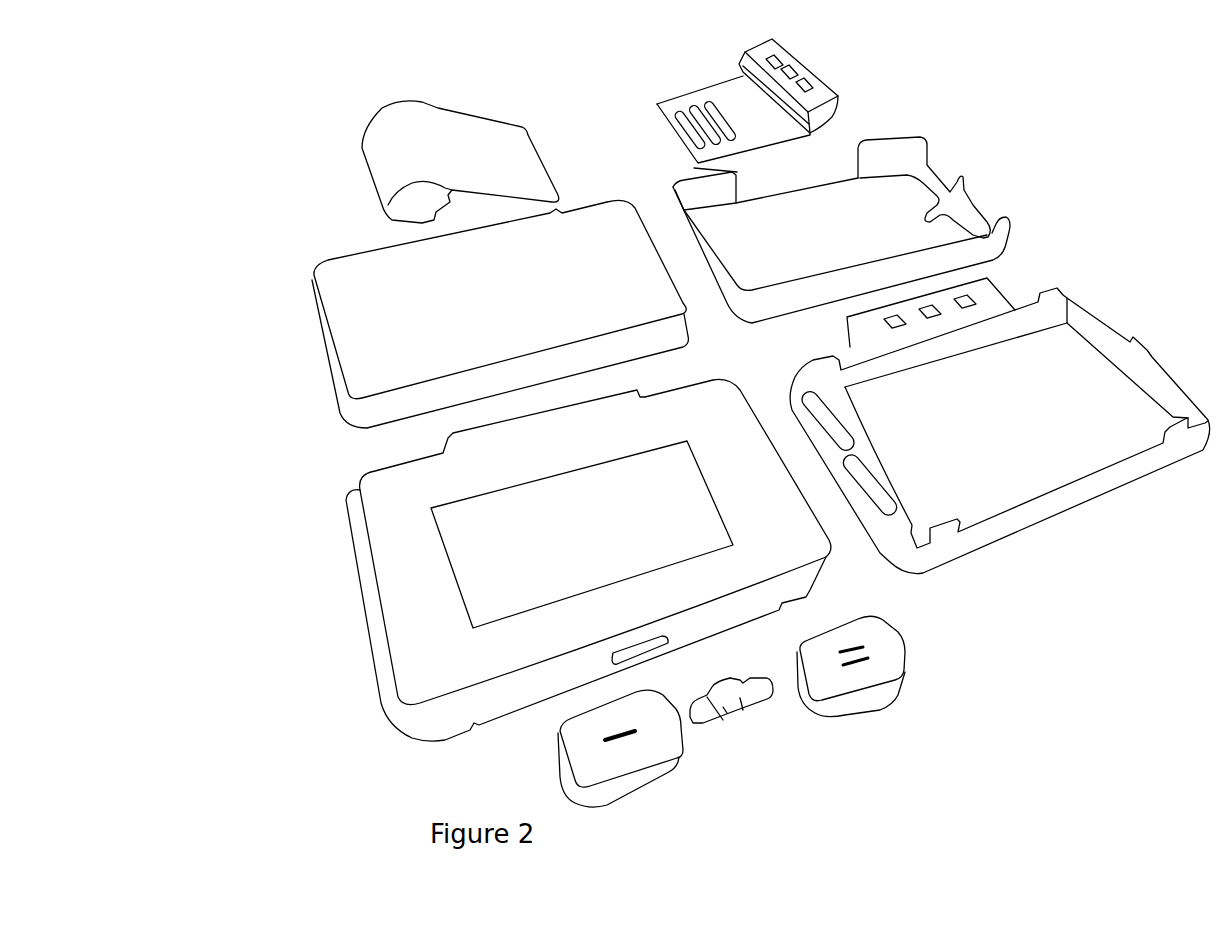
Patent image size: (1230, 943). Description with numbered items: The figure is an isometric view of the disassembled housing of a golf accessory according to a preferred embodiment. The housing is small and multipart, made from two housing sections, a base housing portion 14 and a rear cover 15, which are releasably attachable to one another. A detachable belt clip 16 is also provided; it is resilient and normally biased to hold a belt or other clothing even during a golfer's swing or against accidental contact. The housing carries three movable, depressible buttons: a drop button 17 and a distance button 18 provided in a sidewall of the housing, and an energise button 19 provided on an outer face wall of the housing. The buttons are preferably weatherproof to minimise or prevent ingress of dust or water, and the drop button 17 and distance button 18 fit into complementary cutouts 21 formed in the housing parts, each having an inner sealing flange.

The base housing portion 14 is at (360, 686).
The rear cover 15 is at (306, 347).
The detachable belt clip 16 is at (355, 125).
The drop button 17 is at (673, 778).
The distance button 18 is at (890, 707).
The energise button 19 is at (435, 560).
The complementary cutouts 21 is at (943, 170).